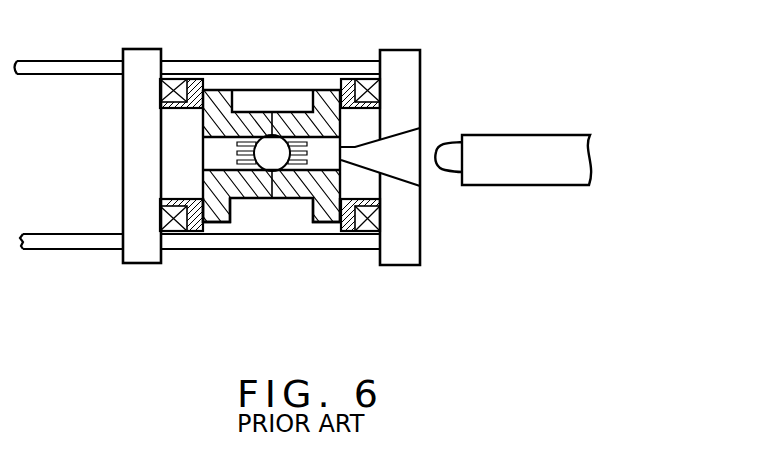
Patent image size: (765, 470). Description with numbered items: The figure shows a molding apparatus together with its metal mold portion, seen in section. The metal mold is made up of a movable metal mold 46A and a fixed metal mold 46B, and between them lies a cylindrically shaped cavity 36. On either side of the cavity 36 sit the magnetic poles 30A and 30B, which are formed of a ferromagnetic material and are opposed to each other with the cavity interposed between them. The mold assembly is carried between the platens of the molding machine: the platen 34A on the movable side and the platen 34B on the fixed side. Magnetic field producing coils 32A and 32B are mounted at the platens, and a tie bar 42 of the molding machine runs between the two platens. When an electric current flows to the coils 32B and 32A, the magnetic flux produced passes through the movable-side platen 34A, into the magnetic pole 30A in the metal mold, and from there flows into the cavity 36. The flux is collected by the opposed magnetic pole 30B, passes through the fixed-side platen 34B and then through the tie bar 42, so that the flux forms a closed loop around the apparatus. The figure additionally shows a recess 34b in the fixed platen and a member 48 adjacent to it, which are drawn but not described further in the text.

The platen 34A is at (140, 65).
The magnetic field producing coil 32A is at (173, 77).
The tie bar 42 is at (262, 68).
The magnetic field producing coil 32B is at (370, 82).
The platen 34B is at (400, 65).
The conical recess 34b is at (408, 147).
The drive shaft 48 is at (548, 173).
The magnetic pole 30A is at (220, 152).
The magnetic pole 30B is at (346, 160).
The movable metal mold 46A is at (212, 223).
The fixed metal mold 46B is at (325, 210).
The cavity 36 is at (272, 163).